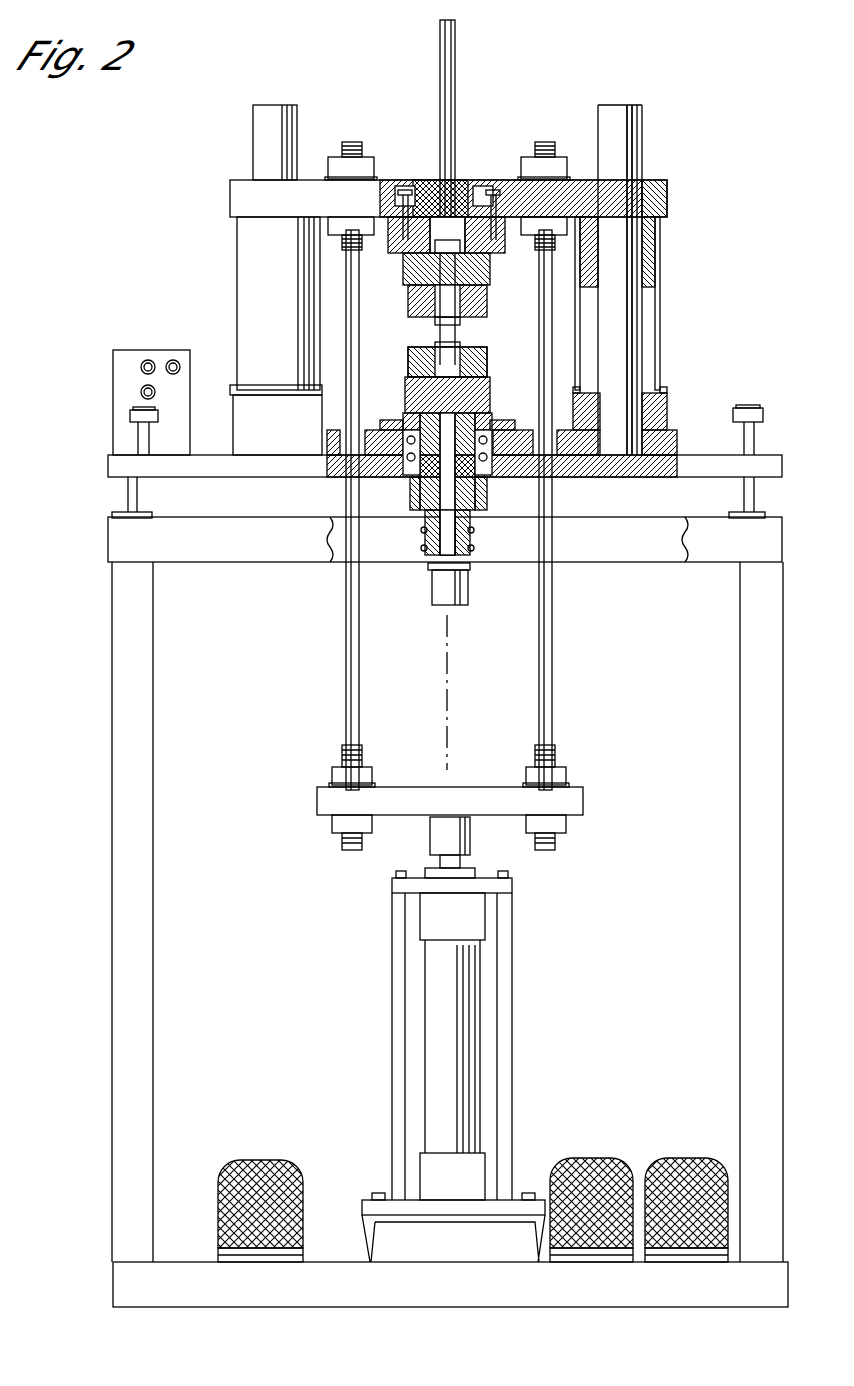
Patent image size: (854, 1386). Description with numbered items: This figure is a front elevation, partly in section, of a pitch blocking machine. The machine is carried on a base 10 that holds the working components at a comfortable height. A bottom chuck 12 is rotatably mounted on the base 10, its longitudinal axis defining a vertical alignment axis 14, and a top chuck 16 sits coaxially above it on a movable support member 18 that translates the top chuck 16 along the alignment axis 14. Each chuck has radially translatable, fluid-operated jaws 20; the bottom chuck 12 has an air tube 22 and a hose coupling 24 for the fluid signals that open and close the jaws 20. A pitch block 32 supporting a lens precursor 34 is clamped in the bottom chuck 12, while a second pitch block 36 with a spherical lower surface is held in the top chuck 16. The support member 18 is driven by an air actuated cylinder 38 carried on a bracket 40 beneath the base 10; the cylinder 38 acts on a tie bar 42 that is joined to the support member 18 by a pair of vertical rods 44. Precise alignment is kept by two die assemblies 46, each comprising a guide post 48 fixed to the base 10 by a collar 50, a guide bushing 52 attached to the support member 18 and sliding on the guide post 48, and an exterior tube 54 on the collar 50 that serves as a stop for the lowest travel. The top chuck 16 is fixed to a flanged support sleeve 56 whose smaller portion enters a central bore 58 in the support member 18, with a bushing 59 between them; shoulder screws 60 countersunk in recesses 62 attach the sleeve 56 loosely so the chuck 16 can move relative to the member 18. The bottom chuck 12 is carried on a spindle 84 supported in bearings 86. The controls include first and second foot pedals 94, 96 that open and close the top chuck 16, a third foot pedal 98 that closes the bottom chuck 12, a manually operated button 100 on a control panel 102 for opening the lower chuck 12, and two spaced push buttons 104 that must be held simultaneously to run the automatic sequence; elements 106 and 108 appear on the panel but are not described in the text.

The base 10 is at (125, 470).
The bottom chuck 12 is at (485, 405).
The alignment axis 14 is at (447, 690).
The top chuck 16 is at (482, 273).
The support member 18 is at (245, 197).
The jaws 20 is at (412, 356).
The air tube 22 is at (450, 512).
The hose coupling 24 is at (457, 585).
The pitch block 32 is at (432, 347).
The lens precursor 34 is at (458, 338).
The pitch block 36 is at (470, 313).
The air actuated cylinder 38 is at (430, 1033).
The bracket 40 is at (505, 965).
The tie bar 42 is at (585, 800).
The vertical rods 44 is at (345, 685).
The die assemblies 46 is at (226, 255).
The guide post 48 is at (627, 352).
The collar 50 is at (655, 405).
The guide bushing 52 is at (648, 255).
The exterior tube 54 is at (660, 305).
The flanged support sleeve 56 is at (462, 182).
The central bore 58 is at (433, 180).
The bushing 59 is at (476, 182).
The shoulder screws 60 is at (398, 180).
The recesses 62 is at (404, 182).
The spindle 84 is at (422, 478).
The bearings 86 is at (478, 437).
The first foot pedal 94 is at (670, 1165).
The second foot pedal 96 is at (585, 1160).
The third foot pedal 98 is at (252, 1168).
The manually operated button 100 is at (180, 365).
The control panel 102 is at (118, 403).
The push buttons 104 is at (132, 418).
The indicator light 106 is at (144, 361).
The indicator light 108 is at (140, 391).